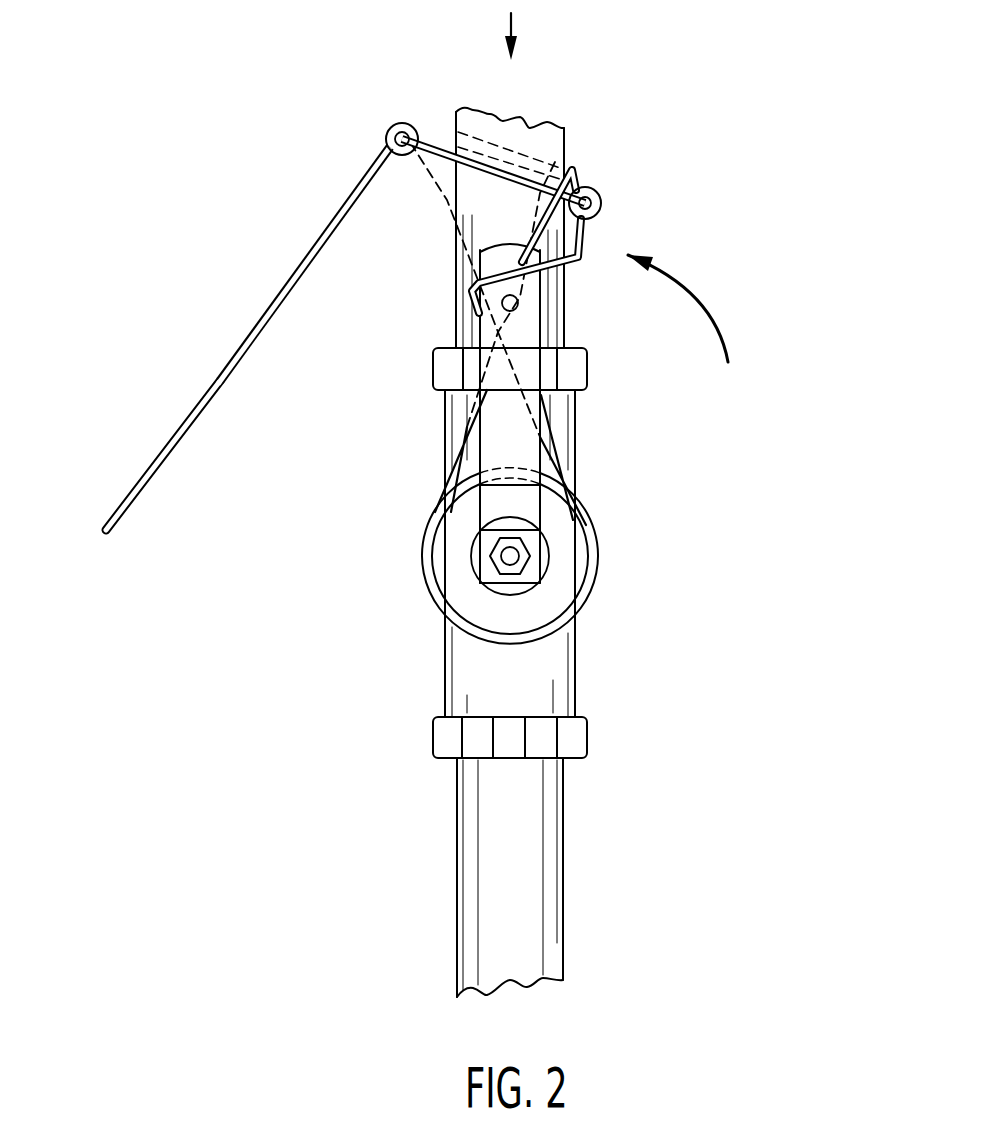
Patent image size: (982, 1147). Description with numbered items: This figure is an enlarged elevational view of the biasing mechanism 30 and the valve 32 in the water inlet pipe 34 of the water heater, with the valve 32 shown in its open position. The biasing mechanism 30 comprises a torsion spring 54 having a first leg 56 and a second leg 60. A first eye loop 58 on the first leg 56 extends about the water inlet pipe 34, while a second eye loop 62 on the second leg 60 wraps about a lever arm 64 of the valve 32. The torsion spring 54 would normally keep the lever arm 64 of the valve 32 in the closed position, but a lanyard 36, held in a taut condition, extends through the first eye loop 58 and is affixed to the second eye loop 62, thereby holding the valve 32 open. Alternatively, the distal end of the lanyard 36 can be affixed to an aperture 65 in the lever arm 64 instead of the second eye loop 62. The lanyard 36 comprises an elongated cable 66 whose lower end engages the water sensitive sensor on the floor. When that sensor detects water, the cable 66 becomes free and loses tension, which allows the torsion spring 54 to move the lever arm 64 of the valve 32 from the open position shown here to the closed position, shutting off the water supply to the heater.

The biasing mechanism 30 is at (385, 535).
The valve 32 is at (460, 677).
The water inlet pipe 34 is at (533, 132).
The lanyard 36 is at (248, 338).
The torsion spring 54 is at (426, 578).
The first leg 56 is at (452, 455).
The first eye loop 58 is at (388, 133).
The second leg 60 is at (557, 467).
The second eye loop 62 is at (600, 200).
The lever arm 64 is at (500, 423).
The aperture 65 is at (520, 303).
The elongated cable 66 is at (151, 462).